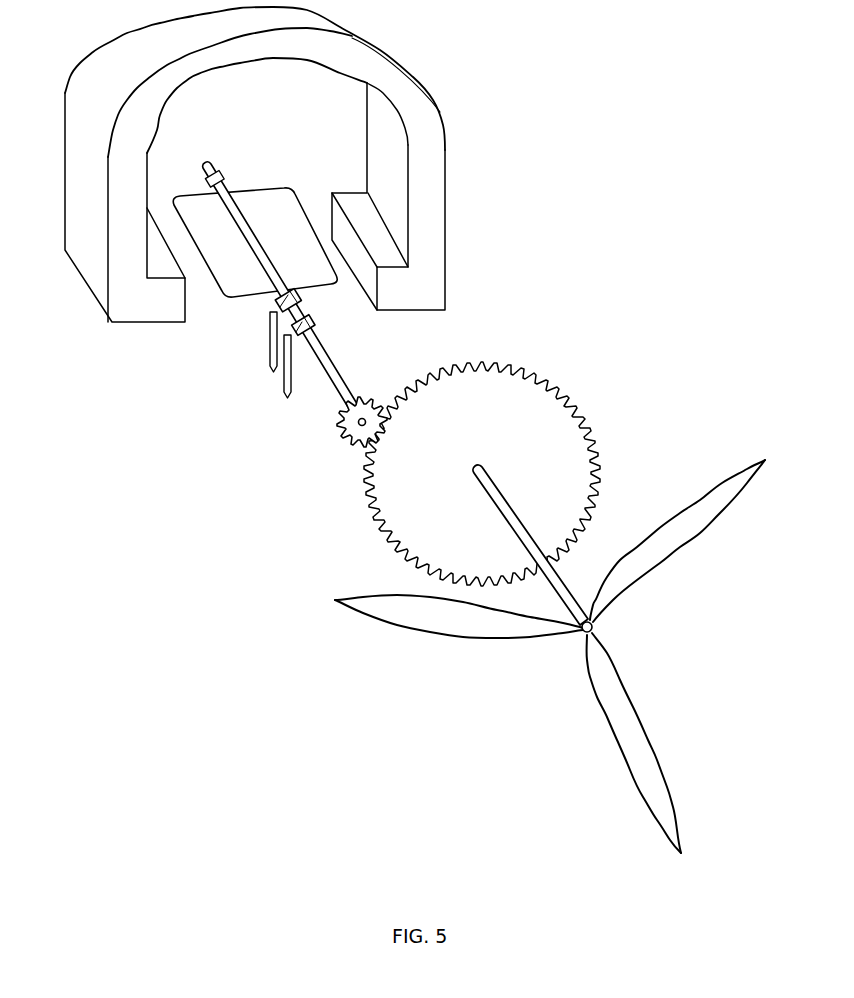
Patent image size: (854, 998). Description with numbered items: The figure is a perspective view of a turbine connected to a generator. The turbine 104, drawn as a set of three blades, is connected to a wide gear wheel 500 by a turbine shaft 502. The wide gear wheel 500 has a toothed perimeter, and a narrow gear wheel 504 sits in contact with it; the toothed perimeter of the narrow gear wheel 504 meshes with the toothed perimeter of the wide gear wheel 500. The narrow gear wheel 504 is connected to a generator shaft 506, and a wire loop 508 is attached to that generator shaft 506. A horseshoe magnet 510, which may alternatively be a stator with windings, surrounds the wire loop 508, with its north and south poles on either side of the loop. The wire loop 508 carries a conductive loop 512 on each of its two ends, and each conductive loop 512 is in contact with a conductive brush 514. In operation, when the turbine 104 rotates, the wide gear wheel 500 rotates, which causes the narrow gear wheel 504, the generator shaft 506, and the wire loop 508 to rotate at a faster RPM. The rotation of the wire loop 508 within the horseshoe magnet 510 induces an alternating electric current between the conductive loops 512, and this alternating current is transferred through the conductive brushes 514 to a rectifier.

The turbine 104 is at (386, 627).
The wide gear wheel 500 is at (580, 415).
The turbine shaft 502 is at (503, 520).
The narrow gear wheel 504 is at (340, 436).
The generator shaft 506 is at (205, 160).
The wire loop 508 is at (308, 197).
The horseshoe magnet 510 is at (440, 108).
The conductive loop 512 is at (272, 284).
The conductive brush 514 is at (270, 343).